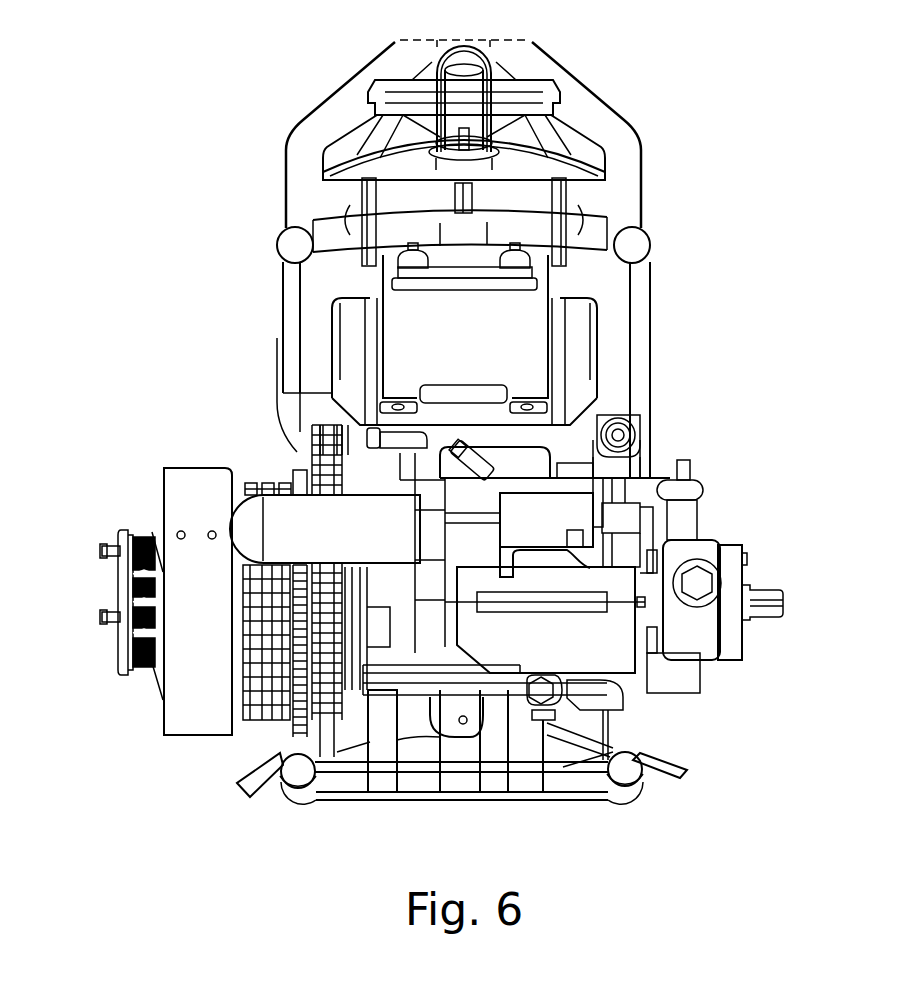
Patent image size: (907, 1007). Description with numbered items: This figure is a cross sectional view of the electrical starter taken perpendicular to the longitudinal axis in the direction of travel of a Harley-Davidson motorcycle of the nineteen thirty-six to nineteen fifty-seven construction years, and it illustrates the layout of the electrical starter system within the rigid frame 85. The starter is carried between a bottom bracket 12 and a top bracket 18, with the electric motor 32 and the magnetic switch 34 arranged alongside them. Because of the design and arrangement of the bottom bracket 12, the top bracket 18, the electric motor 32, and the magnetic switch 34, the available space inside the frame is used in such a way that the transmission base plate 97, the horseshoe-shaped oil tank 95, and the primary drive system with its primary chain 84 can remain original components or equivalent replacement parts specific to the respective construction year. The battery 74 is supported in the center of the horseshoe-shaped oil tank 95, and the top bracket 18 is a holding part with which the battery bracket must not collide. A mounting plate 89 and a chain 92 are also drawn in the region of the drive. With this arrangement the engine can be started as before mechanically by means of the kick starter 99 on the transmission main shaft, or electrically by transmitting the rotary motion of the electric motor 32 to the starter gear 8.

The starter gear 8 is at (293, 588).
The bottom bracket 12 is at (423, 660).
The top bracket 18 is at (338, 512).
The electric motor 32 is at (600, 647).
The magnetic switch 34 is at (577, 568).
The battery 74 is at (510, 338).
The primary chain 84 is at (290, 642).
The rigid frame 85 is at (590, 233).
The mounting plate 89 is at (200, 720).
The drive chain 92 is at (330, 448).
The oil tank 95 is at (612, 373).
The transmission base plate 97 is at (477, 693).
The kick starter 99 is at (783, 601).